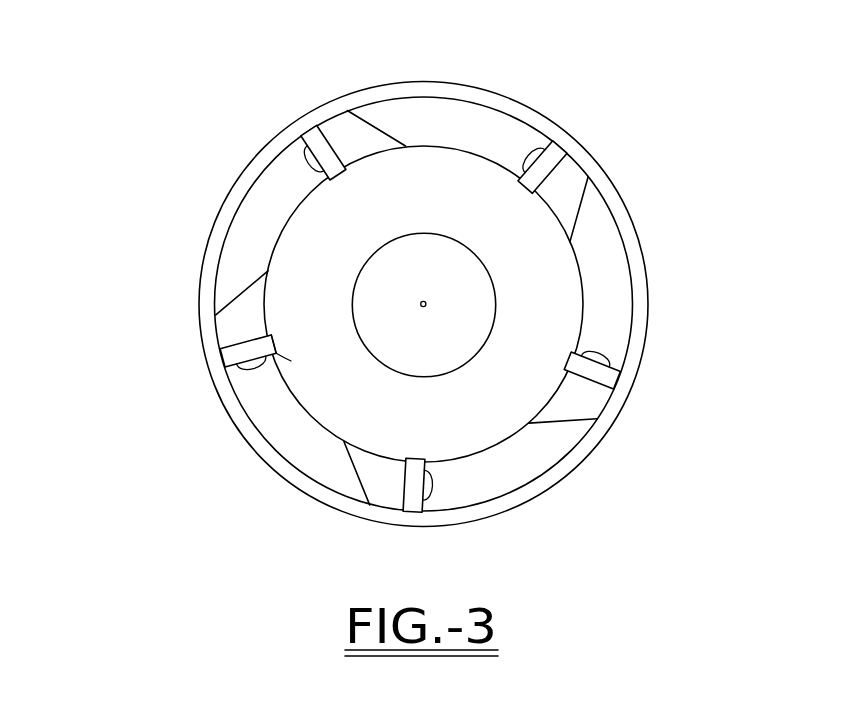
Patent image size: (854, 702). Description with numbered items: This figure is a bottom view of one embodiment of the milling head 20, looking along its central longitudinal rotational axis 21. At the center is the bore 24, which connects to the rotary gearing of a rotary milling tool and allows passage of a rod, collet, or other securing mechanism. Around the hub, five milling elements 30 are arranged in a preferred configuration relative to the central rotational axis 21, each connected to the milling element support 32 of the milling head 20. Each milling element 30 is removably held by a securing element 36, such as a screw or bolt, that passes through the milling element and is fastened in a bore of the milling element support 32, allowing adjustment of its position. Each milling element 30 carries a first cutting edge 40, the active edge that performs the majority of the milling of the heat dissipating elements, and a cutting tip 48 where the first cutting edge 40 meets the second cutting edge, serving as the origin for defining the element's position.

The milling head 20 is at (222, 167).
The central longitudinal rotational axis 21 is at (421, 299).
The bore 24 is at (558, 250).
The milling element 30 is at (315, 137).
The milling element support 32 is at (586, 175).
The securing element 36 is at (536, 152).
The first cutting edge 40 is at (272, 341).
The cutting tip 48 is at (281, 358).